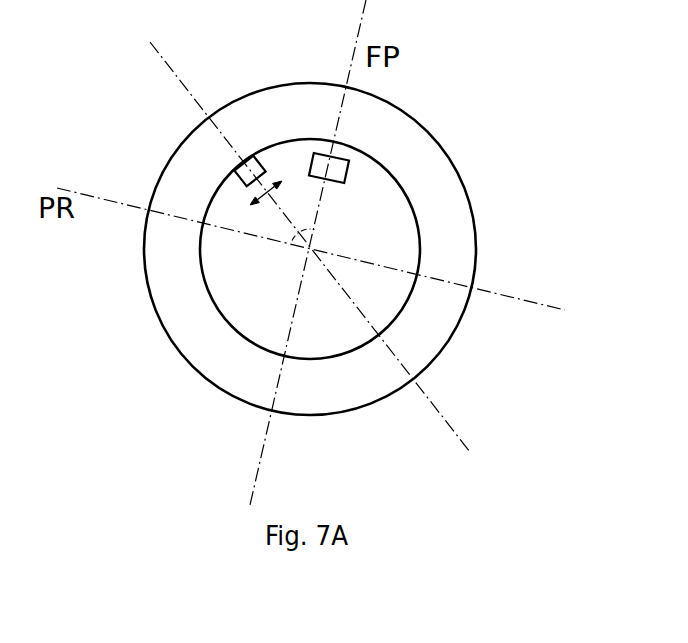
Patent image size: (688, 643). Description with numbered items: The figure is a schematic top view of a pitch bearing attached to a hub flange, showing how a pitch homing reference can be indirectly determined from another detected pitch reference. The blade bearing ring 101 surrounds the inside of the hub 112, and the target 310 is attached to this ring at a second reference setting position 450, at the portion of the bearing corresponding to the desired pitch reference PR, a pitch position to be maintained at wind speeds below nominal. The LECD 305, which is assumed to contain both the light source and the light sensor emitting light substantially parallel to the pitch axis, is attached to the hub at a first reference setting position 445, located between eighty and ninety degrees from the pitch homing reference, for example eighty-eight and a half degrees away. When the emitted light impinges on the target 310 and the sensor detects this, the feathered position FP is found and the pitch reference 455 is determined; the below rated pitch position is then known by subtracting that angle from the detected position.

The blade bearing ring 101 is at (428, 340).
The inside of the hub 112 is at (402, 299).
The LECD 305 is at (348, 167).
The target 310 is at (246, 156).
The first reference setting position 445 is at (333, 190).
The second reference setting position 450 is at (247, 165).
The pitch reference 455 is at (372, 2).